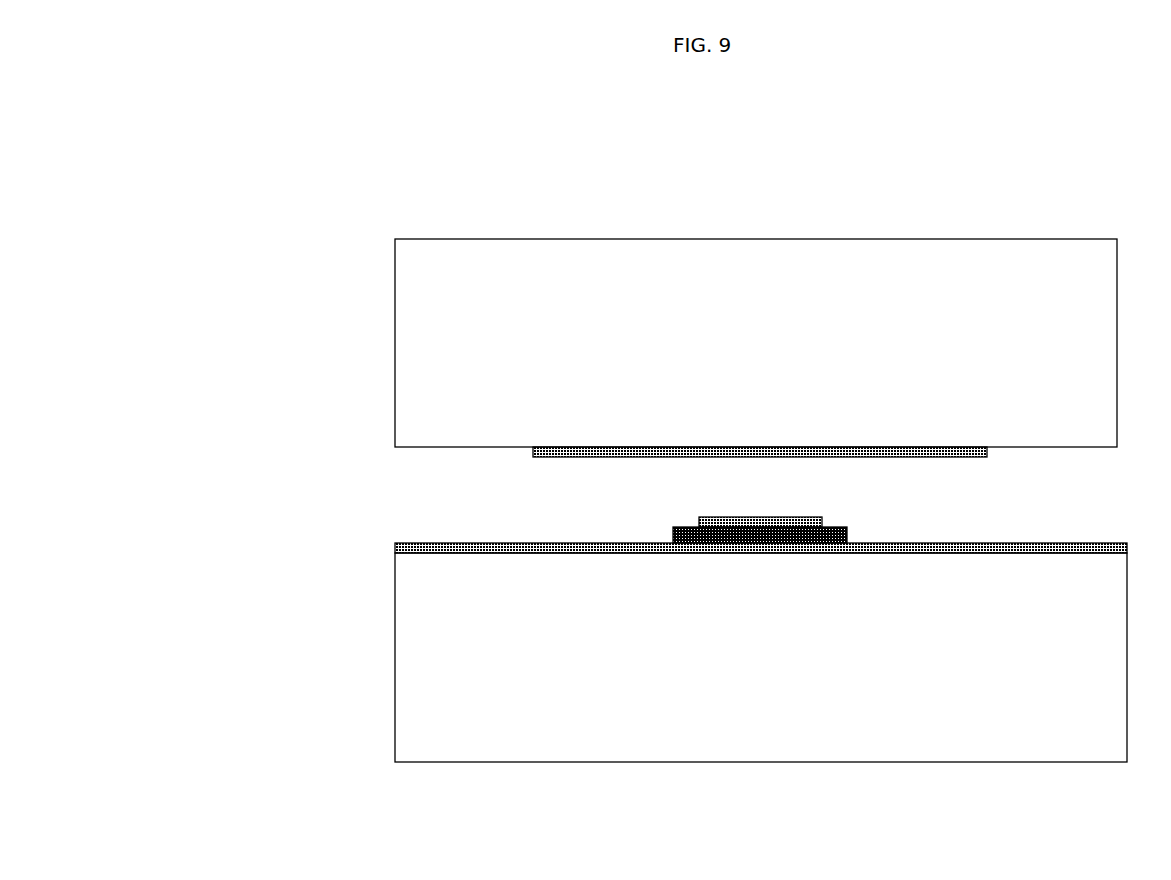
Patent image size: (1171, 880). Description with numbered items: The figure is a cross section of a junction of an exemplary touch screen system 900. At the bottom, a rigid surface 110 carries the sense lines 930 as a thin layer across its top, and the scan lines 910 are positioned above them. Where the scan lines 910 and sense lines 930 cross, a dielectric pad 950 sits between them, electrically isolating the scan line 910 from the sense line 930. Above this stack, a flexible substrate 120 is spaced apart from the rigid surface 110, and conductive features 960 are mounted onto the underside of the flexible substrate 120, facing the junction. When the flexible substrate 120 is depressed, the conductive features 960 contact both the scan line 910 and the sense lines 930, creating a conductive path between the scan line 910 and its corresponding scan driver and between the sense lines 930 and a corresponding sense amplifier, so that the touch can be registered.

The touch screen system 900 is at (222, 106).
The flexible substrate 120 is at (395, 368).
The conductive features 960 is at (930, 458).
The scan lines 910 is at (768, 516).
The dielectric pads 950 is at (672, 530).
The sense lines 930 is at (486, 543).
The rigid surface 110 is at (395, 727).